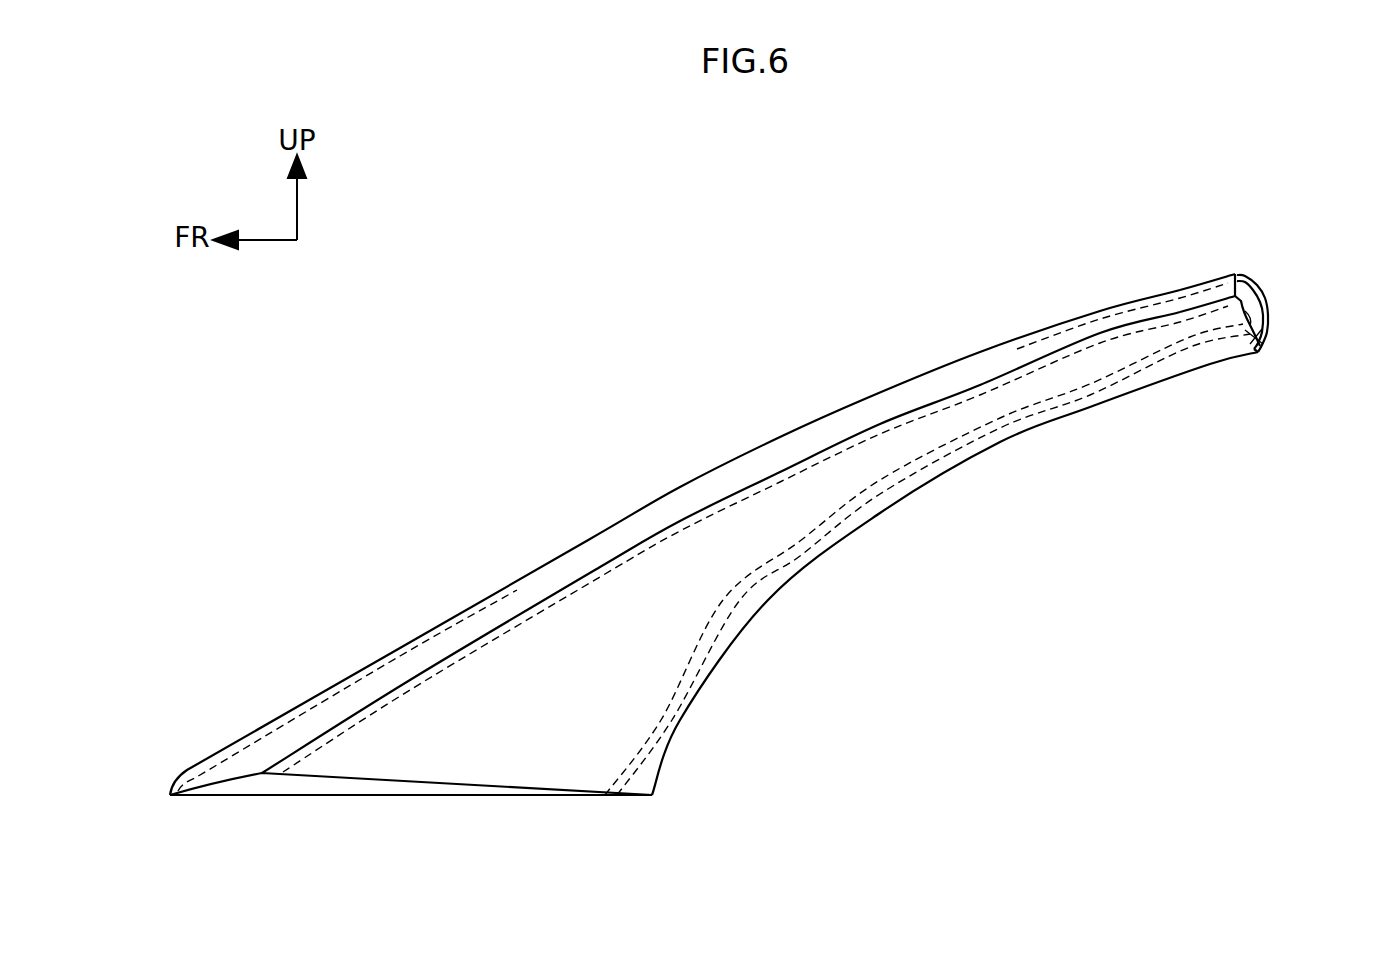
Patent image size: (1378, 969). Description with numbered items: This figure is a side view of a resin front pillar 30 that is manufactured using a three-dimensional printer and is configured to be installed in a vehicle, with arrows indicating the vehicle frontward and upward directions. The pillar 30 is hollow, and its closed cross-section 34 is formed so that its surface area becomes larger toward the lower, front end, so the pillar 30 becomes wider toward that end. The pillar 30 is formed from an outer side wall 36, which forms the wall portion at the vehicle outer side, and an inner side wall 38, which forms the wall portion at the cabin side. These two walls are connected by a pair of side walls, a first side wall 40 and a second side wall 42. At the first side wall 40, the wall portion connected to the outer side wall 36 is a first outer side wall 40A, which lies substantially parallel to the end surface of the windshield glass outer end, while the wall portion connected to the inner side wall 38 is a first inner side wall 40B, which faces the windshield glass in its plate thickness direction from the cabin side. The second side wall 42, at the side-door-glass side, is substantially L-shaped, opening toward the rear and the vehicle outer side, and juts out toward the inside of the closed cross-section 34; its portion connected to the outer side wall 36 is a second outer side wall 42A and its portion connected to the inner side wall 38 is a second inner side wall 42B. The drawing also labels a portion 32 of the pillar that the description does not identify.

The front pillar 30 is at (862, 263).
The design surface 32 is at (755, 454).
The closed cross-section 34 is at (1247, 340).
The outer side wall 36 is at (1263, 302).
The inner side wall 38 is at (1105, 360).
The first side wall 40 is at (1078, 148).
The first outer side wall 40A is at (1204, 290).
The first inner side wall 40B is at (1238, 276).
The second side wall 42 is at (1365, 161).
The second outer side wall 42A is at (1267, 326).
The second inner side wall 42B is at (1268, 341).